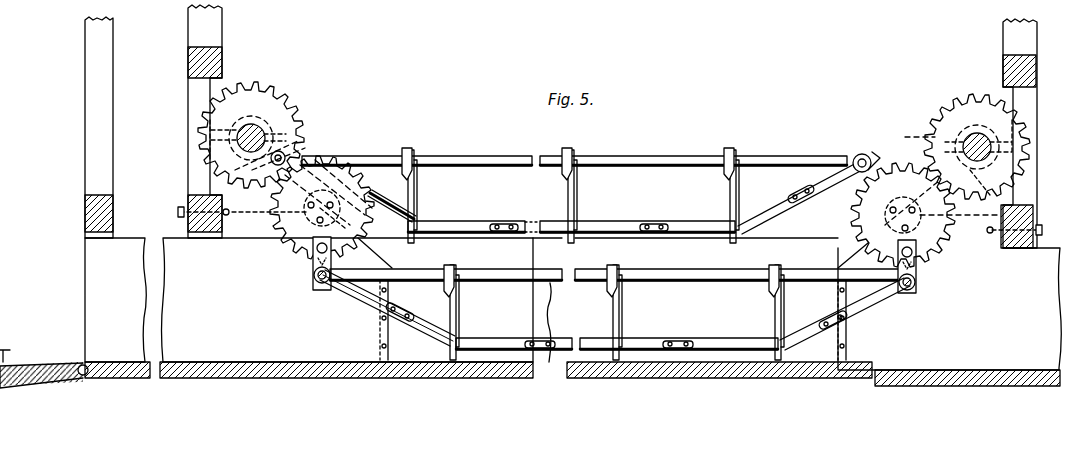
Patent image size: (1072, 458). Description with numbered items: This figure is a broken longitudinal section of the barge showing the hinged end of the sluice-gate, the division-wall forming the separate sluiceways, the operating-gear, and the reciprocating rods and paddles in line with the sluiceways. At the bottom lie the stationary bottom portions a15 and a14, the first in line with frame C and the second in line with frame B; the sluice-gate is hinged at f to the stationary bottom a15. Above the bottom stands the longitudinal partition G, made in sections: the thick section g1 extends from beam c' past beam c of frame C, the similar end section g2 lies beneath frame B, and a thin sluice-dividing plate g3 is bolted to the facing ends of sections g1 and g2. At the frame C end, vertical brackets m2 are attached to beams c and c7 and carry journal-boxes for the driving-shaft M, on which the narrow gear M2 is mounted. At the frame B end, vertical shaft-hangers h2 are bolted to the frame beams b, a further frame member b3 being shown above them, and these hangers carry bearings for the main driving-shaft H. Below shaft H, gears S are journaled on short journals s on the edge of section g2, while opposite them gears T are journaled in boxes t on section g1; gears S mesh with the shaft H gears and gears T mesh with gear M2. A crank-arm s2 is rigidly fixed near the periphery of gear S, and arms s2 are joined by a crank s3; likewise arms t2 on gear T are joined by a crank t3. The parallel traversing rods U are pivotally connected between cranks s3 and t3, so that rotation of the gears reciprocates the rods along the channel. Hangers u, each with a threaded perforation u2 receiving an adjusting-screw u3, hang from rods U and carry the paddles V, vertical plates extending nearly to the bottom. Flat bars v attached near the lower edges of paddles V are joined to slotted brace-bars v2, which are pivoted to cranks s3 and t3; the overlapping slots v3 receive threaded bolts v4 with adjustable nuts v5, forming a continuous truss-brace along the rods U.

The longitudinal partition G is at (115, 189).
The beam of frame C c is at (188, 207).
The beam of frame C c7 is at (222, 62).
The hinge of sluice-gate f is at (82, 365).
The vertical bracket m2 is at (215, 217).
The partition section g1 is at (348, 300).
The partition section g2 is at (949, 306).
The sluice-dividing plate g3 is at (685, 300).
The stationary bottom portion a15 is at (255, 378).
The stationary bottom portion a14 is at (925, 386).
The gear M2 is at (270, 120).
The driving-shaft M is at (282, 152).
The gear T is at (340, 155).
The journal-box t is at (312, 215).
The crank-arm t2 is at (312, 273).
The crank t3 is at (318, 279).
The traversing rod U is at (650, 160).
The hanger u is at (565, 180).
The screw-threaded perforation u2 is at (412, 150).
The adjusting-screw u3 is at (408, 148).
The flat bar v is at (456, 221).
The brace-bar v2 is at (647, 213).
The longitudinal slot v3 is at (378, 316).
The threaded bolt v4 is at (835, 312).
The adjustable nut v5 is at (599, 286).
The paddle V is at (775, 322).
The gear S is at (855, 222).
The short journal s is at (895, 208).
The crank-arm s2 is at (858, 152).
The crank s3 is at (915, 290).
The main driving-shaft H is at (907, 137).
The beam of frame B b is at (1036, 212).
The bearing block b3 is at (1003, 70).
The shaft-hanger h2 is at (1014, 210).